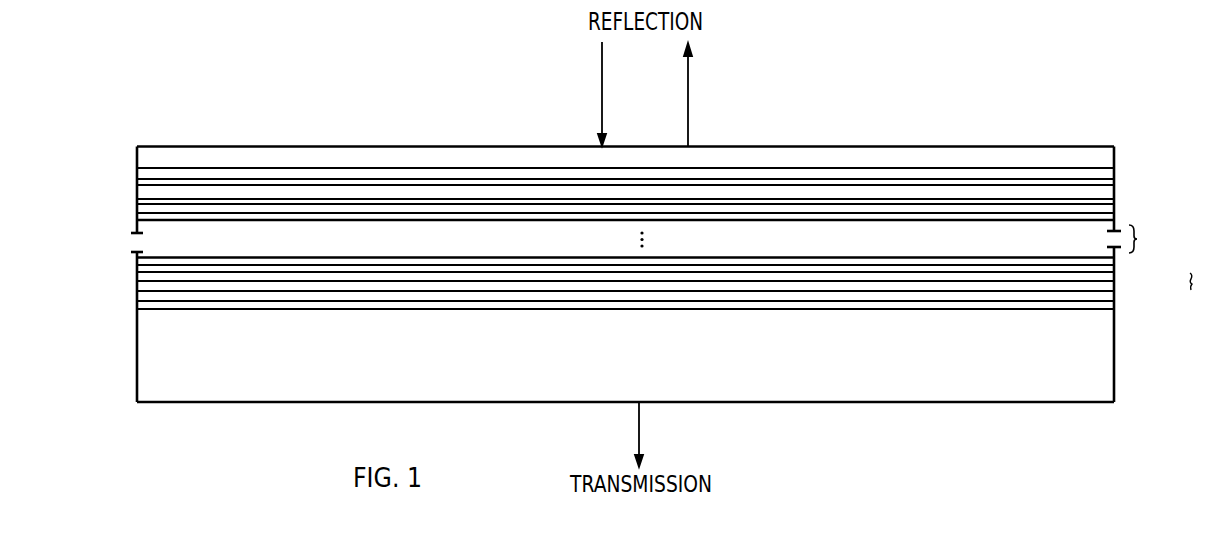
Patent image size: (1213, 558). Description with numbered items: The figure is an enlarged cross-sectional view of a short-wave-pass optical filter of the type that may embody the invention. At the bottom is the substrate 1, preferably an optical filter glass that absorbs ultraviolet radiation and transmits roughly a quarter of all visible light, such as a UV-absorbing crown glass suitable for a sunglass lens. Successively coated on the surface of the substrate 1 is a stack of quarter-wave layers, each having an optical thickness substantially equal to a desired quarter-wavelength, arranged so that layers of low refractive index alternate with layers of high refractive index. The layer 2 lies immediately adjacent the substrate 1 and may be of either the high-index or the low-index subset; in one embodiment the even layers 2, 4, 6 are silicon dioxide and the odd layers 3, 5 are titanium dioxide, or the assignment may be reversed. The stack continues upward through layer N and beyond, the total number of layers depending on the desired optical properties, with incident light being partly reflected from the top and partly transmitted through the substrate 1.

The substrate 1 is at (137, 365).
The quarter-wave layer 2 is at (137, 301).
The quarter-wave layer 3 is at (1114, 287).
The quarter-wave layer 4 is at (137, 281).
The quarter-wave layer 5 is at (1114, 268).
The quarter-wave layer 6 is at (137, 263).
The quarter-wave layer N is at (137, 219).